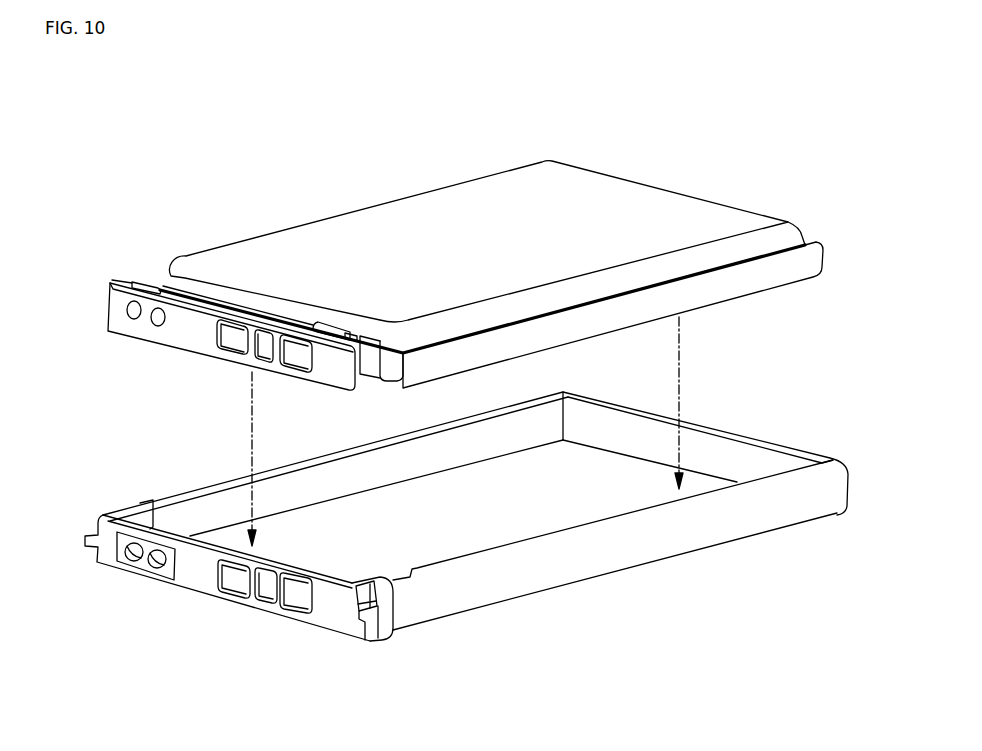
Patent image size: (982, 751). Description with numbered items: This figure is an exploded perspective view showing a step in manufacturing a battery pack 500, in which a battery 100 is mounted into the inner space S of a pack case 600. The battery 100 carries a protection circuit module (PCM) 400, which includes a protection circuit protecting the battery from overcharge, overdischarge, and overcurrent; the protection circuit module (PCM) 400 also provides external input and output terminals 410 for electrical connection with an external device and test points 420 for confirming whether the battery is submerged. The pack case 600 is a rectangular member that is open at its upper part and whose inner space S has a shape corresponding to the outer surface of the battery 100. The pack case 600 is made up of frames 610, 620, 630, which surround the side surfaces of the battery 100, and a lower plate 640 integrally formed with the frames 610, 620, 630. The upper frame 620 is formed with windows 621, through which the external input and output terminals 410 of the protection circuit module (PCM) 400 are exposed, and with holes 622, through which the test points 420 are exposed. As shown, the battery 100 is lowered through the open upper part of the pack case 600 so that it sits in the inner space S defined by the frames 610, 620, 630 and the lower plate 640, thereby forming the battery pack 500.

The battery pack 500 is at (77, 107).
The battery 100 is at (372, 184).
The protection circuit module (PCM) 400 is at (115, 280).
The external input and output terminals 410 is at (228, 343).
The test points 420 is at (131, 316).
The pack case 600 is at (738, 573).
The frame 610 is at (562, 571).
The upper frame 620 is at (328, 622).
The windows 621 is at (237, 585).
The holes 622 is at (130, 560).
The frame 630 is at (737, 433).
The lower plate 640 is at (385, 512).
The inner space S is at (462, 499).